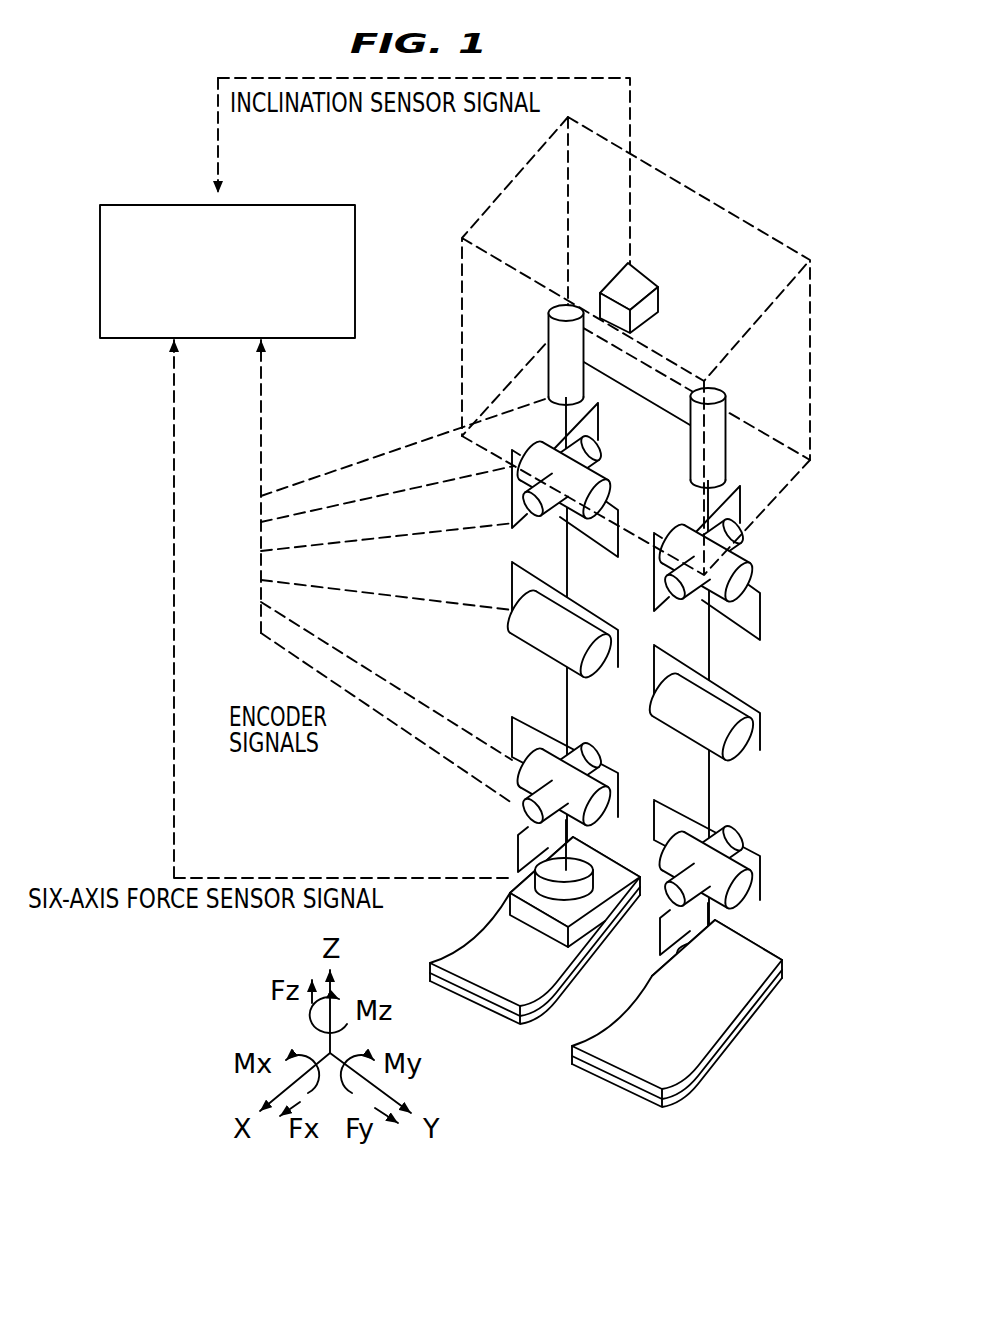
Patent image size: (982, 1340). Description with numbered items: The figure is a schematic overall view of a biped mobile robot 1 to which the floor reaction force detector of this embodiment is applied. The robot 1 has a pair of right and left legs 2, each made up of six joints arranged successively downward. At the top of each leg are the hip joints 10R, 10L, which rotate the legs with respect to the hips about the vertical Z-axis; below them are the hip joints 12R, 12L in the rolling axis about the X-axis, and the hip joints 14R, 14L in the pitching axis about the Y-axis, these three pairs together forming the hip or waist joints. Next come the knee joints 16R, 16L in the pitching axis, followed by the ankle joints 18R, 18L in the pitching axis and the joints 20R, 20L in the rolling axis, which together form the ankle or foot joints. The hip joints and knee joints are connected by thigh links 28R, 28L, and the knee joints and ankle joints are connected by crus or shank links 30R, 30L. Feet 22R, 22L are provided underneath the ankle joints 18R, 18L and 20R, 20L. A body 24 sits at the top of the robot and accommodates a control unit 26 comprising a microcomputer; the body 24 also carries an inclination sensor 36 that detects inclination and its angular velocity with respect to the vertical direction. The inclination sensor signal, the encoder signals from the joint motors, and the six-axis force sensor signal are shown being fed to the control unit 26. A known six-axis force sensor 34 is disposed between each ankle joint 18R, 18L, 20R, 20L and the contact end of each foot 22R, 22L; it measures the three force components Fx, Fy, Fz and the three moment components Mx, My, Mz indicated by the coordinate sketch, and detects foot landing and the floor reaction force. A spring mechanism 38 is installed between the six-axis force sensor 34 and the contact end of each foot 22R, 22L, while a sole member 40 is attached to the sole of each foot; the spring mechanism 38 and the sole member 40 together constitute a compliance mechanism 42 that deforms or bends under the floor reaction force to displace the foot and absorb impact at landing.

The biped mobile robot 1 is at (764, 551).
The legs 2 is at (759, 691).
The right hip joint 10R is at (585, 397).
The left hip joint 10L is at (713, 453).
The right hip joint in the rolling axis 12R is at (597, 452).
The left hip joint in the rolling axis 12L is at (750, 532).
The right hip joint in the pitching axis 14R is at (607, 489).
The left hip joint in the pitching axis 14L is at (755, 578).
The right knee joint 16R is at (602, 672).
The left knee joint 16L is at (742, 755).
The right ankle joint in the pitching axis 18R is at (600, 822).
The left ankle joint in the pitching axis 18L is at (740, 897).
The right ankle joint in the rolling axis 20R is at (600, 752).
The left ankle joint in the rolling axis 20L is at (740, 837).
The right foot 22R is at (517, 1002).
The left foot 22L is at (668, 1074).
The body 24 is at (688, 188).
The control unit 26 is at (322, 206).
The right thigh link 28R is at (570, 572).
The left thigh link 28L is at (710, 648).
The right crus or shank link 30R is at (565, 698).
The left crus or shank link 30L is at (709, 795).
The six-axis force sensor 34 is at (545, 921).
The inclination sensor 36 is at (645, 288).
The spring mechanism 38 is at (520, 908).
The sole member 40 is at (538, 1017).
The compliance mechanism 42 is at (843, 1005).